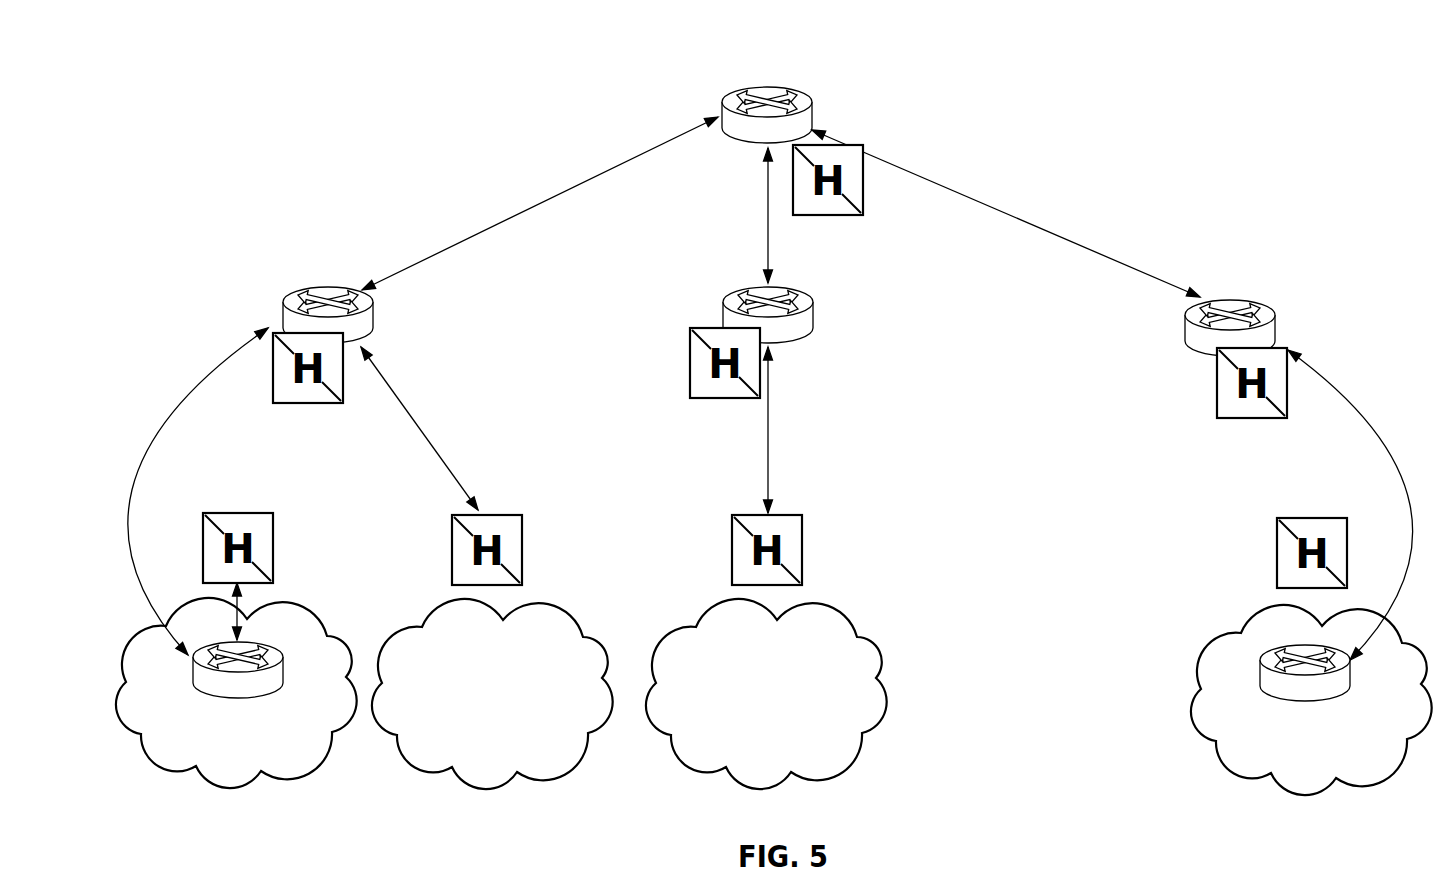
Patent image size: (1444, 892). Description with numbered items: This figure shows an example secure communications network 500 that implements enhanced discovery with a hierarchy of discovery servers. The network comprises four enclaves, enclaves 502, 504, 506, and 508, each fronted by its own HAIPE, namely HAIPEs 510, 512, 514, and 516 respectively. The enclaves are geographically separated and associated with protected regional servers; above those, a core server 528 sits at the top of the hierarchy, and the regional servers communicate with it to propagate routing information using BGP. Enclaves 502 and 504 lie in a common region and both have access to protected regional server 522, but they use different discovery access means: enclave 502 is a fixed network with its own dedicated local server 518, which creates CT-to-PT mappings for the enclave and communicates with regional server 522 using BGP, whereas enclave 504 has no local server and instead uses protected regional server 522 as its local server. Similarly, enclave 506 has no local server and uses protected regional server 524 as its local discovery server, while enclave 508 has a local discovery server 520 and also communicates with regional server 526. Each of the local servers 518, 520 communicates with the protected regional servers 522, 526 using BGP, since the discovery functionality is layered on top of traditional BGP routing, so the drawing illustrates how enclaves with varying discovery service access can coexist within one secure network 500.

The secure communications network 500 is at (1414, 68).
The enclave 502 is at (236, 705).
The enclave 504 is at (492, 706).
The enclave 506 is at (766, 706).
The enclave 508 is at (1311, 712).
The HAIPE 510 is at (272, 548).
The HAIPE 512 is at (521, 550).
The HAIPE 514 is at (802, 550).
The HAIPE 516 is at (1275, 553).
The local server 518 is at (238, 708).
The local discovery server 520 is at (1305, 713).
The protected regional server 522 is at (386, 345).
The protected regional server 524 is at (812, 342).
The regional server 526 is at (1177, 359).
The core server 528 is at (773, 131).